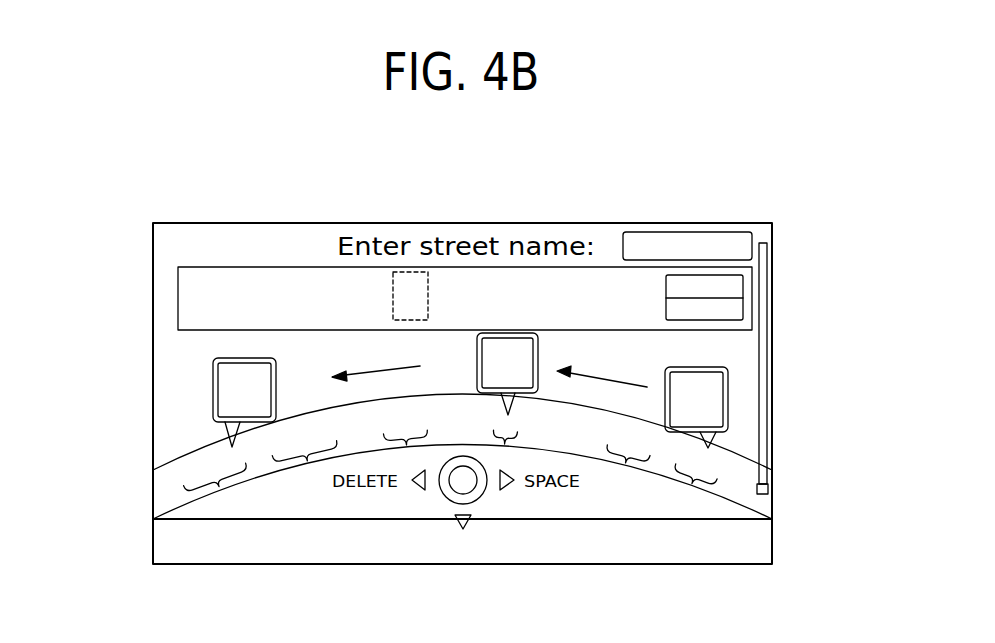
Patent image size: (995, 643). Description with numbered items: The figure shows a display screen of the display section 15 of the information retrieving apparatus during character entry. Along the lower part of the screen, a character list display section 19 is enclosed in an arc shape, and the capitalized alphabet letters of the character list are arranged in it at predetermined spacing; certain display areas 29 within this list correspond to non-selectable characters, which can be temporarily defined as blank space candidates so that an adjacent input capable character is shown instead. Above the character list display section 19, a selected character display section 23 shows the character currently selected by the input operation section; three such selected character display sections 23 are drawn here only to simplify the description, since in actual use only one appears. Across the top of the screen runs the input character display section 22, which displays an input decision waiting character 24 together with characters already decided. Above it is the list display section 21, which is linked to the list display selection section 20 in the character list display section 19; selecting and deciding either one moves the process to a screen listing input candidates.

The display section 15 is at (740, 205).
The character list display section 19 is at (772, 502).
The list display selection section 20 is at (768, 488).
The list display section 21 is at (690, 232).
The input character display section 22 is at (250, 267).
The selected character display section 23 is at (213, 392).
The input decision waiting character 24 is at (415, 268).
The display area 29 is at (309, 461).